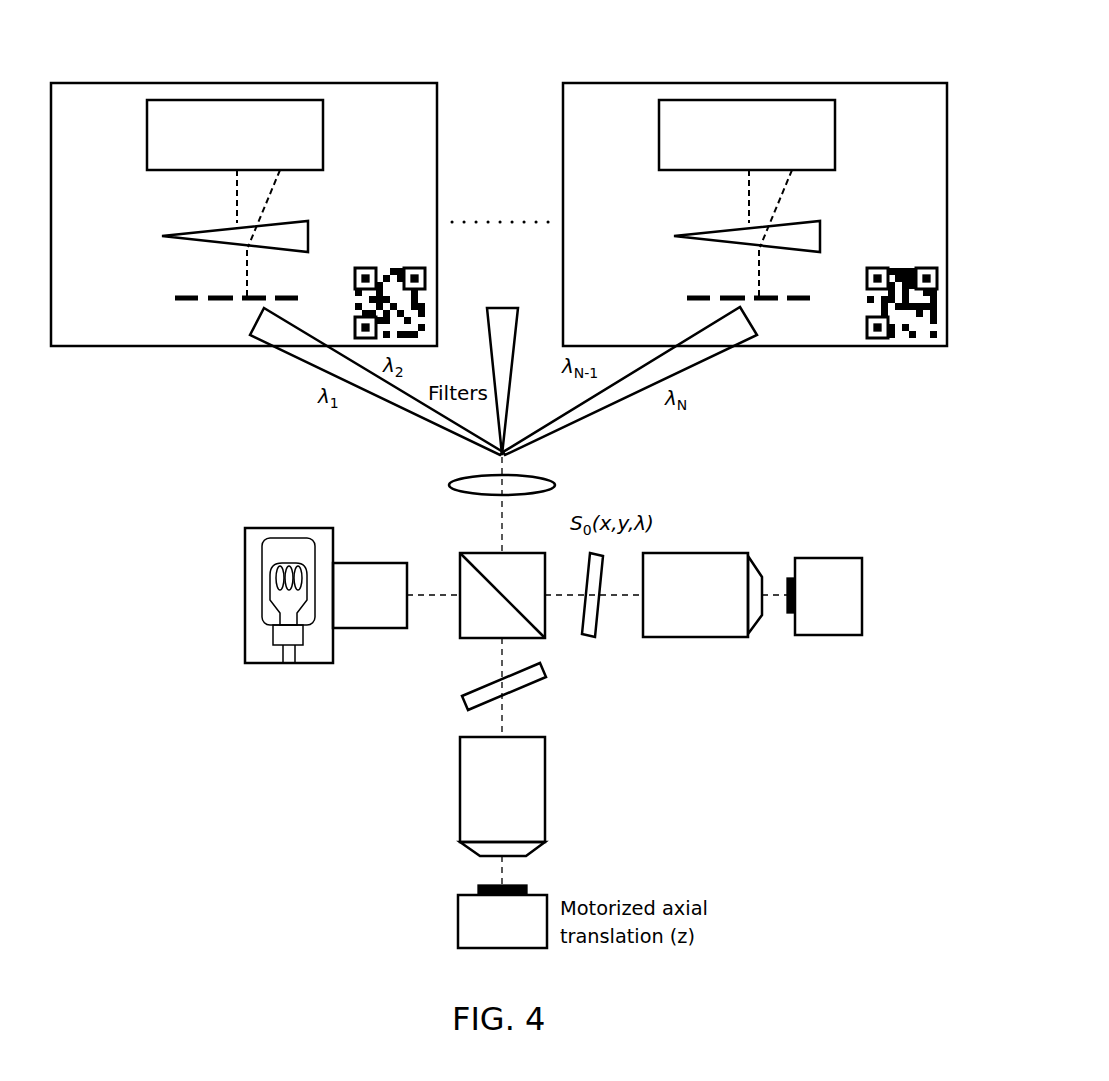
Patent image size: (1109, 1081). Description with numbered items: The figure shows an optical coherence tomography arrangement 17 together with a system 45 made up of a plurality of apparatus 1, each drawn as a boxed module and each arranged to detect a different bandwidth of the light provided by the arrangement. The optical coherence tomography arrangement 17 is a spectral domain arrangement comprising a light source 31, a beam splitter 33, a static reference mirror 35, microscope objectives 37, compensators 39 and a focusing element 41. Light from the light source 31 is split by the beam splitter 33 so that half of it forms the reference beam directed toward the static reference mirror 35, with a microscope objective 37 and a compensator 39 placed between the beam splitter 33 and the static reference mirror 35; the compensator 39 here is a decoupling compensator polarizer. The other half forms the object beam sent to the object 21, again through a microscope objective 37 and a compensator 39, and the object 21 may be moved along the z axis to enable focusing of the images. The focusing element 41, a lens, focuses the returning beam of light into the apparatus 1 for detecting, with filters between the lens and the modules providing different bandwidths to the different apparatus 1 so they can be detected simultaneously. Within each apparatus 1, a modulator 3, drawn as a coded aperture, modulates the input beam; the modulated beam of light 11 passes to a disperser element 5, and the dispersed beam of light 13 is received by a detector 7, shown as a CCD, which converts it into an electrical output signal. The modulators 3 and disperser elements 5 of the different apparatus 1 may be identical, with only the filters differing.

The apparatus 1 is at (446, 122).
The modulator 3 is at (300, 297).
The disperser element 5 is at (310, 237).
The detector 7 is at (147, 140).
The modulated beam of light 11 is at (246, 290).
The dispersed beam of light 13 is at (236, 212).
The optical coherence tomography arrangement 17 is at (852, 526).
The object 21 is at (463, 879).
The light source 31 is at (290, 664).
The beam splitter 33 is at (460, 638).
The static reference mirror 35 is at (787, 626).
The microscope objective 37 is at (695, 638).
The compensator 39 is at (598, 622).
The focusing element 41 is at (556, 488).
The system 45 is at (499, 173).